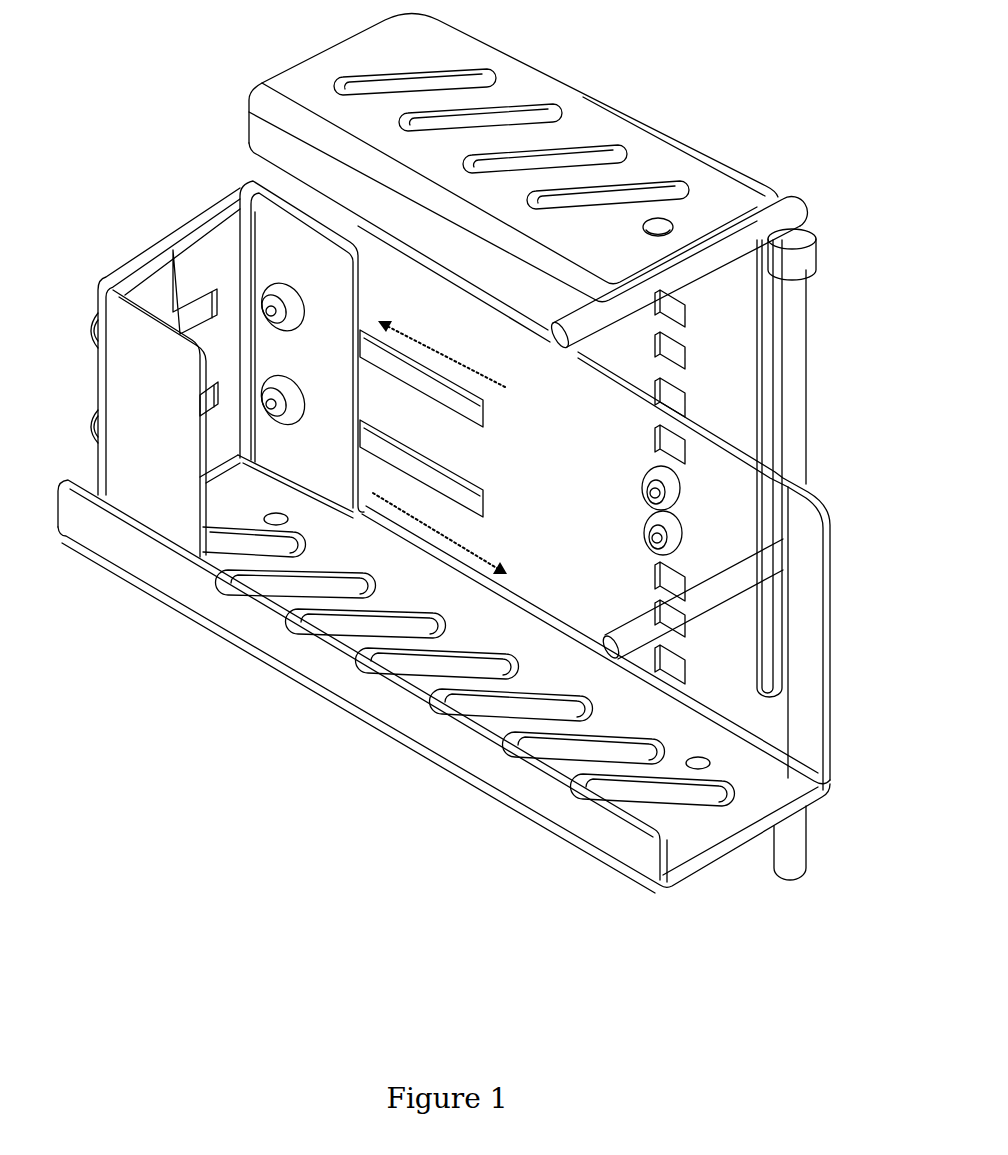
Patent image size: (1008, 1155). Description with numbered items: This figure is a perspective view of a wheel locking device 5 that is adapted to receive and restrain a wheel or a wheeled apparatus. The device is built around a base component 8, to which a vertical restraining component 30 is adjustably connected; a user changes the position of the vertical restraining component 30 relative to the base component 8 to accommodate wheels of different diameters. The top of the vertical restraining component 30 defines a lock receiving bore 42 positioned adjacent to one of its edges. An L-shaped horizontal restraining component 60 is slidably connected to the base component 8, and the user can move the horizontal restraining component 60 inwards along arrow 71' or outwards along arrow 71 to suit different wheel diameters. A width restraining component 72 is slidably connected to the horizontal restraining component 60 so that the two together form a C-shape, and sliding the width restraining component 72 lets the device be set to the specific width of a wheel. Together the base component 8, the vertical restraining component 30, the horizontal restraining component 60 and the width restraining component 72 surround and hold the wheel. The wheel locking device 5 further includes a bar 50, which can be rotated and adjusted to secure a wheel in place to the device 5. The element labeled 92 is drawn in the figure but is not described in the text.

The wheel locking device 5 is at (226, 788).
The vertical restraining component 30 is at (579, 128).
The lock receiving bore 42 is at (660, 225).
The bar 50 is at (790, 346).
The base component 8 is at (790, 715).
The arrow 71 is at (432, 356).
The arrow 71' is at (466, 497).
The horizontal restraining component 60 is at (280, 250).
The width restraining component 72 is at (150, 497).
The bottom tray 92 is at (608, 712).